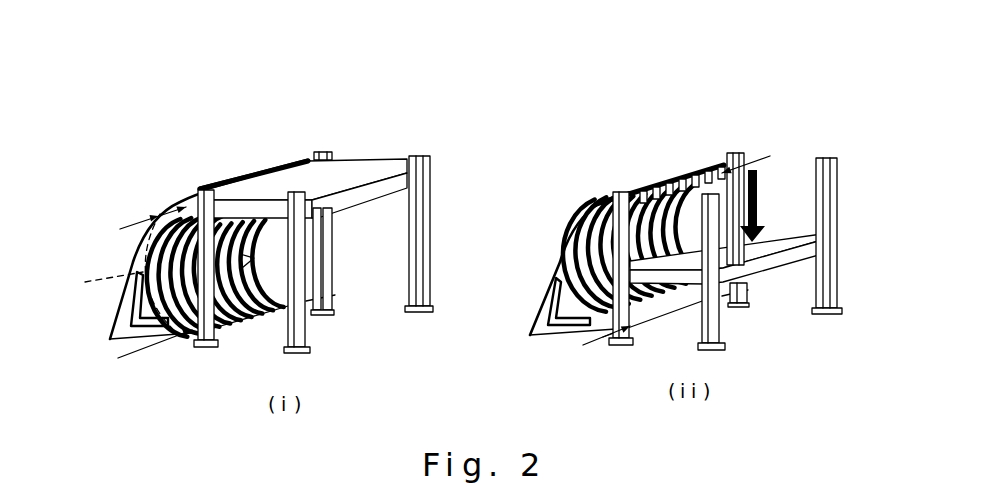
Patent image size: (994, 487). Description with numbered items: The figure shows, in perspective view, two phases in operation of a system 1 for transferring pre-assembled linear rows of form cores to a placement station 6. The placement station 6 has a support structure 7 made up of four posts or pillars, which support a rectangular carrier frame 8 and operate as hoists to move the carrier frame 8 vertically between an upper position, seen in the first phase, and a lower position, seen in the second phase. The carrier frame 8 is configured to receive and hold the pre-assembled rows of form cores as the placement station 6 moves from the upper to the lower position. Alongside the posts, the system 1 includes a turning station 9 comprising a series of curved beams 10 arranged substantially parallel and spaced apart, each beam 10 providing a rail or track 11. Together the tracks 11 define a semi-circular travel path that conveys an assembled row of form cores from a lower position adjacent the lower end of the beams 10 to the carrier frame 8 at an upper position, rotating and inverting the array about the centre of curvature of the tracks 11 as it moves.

The system 1 is at (481, 211).
The placement station 6 is at (436, 160).
The support structure 7 is at (432, 222).
The carrier frame 8 is at (353, 172).
The turning station 9 is at (138, 192).
The curved beams 10 is at (640, 262).
The rail or track 11 is at (247, 268).